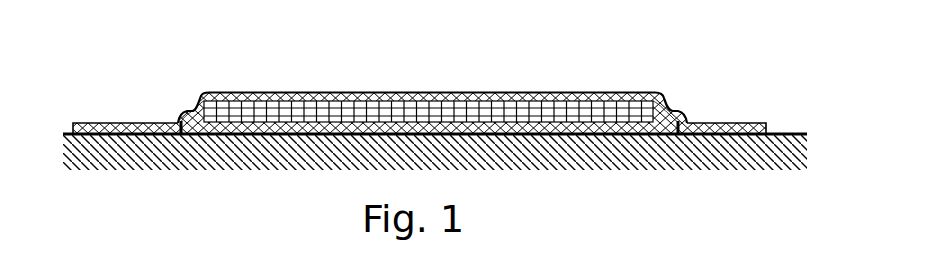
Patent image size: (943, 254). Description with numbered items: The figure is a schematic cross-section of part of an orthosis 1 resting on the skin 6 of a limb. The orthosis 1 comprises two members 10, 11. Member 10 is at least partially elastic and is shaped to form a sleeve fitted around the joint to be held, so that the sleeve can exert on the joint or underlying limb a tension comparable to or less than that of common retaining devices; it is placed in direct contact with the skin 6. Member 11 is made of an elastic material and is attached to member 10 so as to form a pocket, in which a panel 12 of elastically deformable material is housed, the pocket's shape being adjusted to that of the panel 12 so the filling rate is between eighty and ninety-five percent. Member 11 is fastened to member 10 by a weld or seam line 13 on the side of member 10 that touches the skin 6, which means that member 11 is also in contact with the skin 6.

The orthosis 1 is at (342, 76).
The skin 6 is at (772, 150).
The member 10 is at (121, 123).
The member 11 is at (290, 93).
The panel 12 is at (506, 104).
The weld or seam line 13 is at (191, 110).